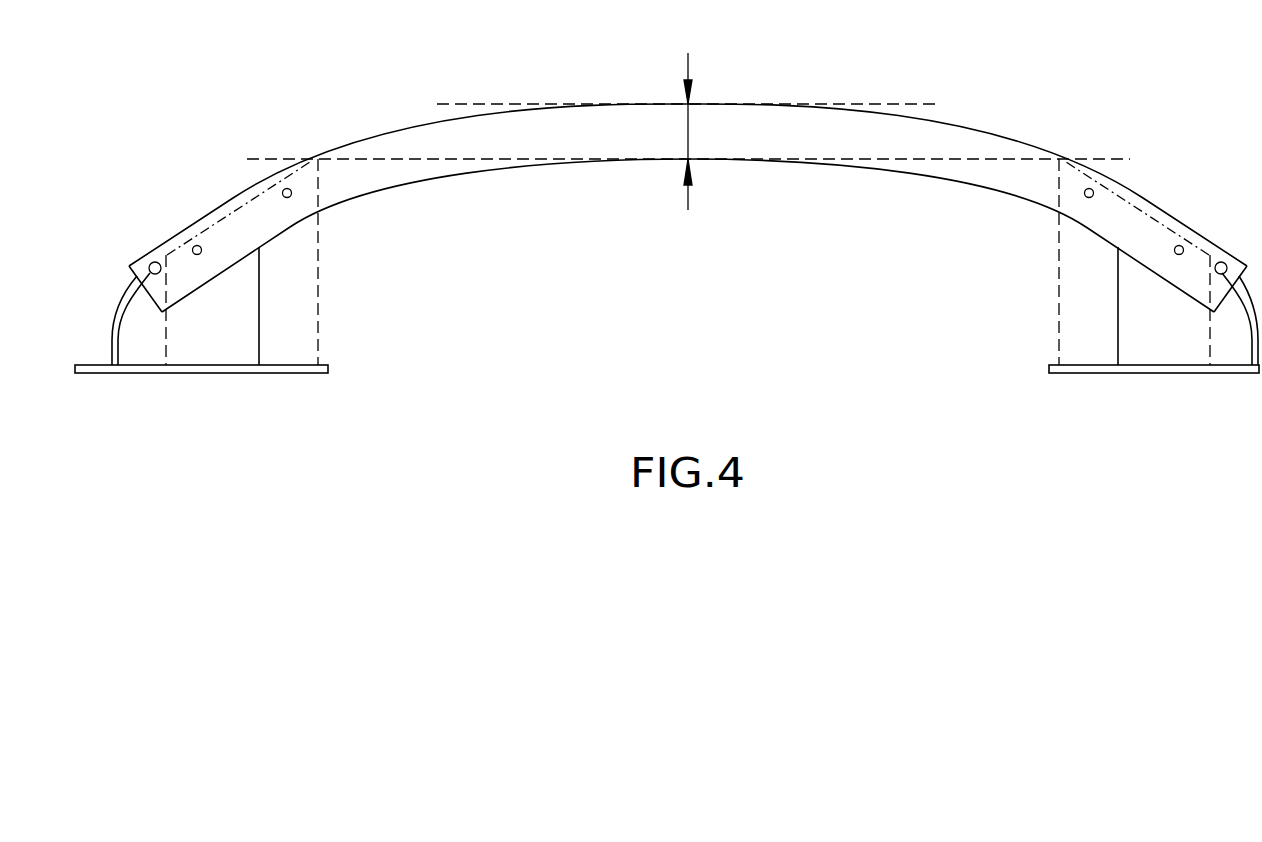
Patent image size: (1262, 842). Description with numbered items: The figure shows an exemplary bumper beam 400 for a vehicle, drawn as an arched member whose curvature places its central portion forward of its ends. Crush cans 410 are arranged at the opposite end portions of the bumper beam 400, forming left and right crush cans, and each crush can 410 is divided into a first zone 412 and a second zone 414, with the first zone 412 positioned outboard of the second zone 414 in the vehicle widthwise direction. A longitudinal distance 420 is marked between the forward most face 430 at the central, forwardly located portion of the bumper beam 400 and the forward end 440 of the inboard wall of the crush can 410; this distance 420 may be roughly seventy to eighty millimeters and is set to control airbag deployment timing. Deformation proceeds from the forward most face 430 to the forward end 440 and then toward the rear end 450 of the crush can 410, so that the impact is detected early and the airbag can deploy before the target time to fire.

The bumper beam 400 is at (328, 110).
The crush can 410 is at (318, 287).
The first zone 412 is at (233, 341).
The second zone 414 is at (308, 308).
The longitudinal distance 420 is at (690, 132).
The forward most face 430 is at (682, 103).
The forward end 440 is at (318, 156).
The rear end 450 is at (322, 373).